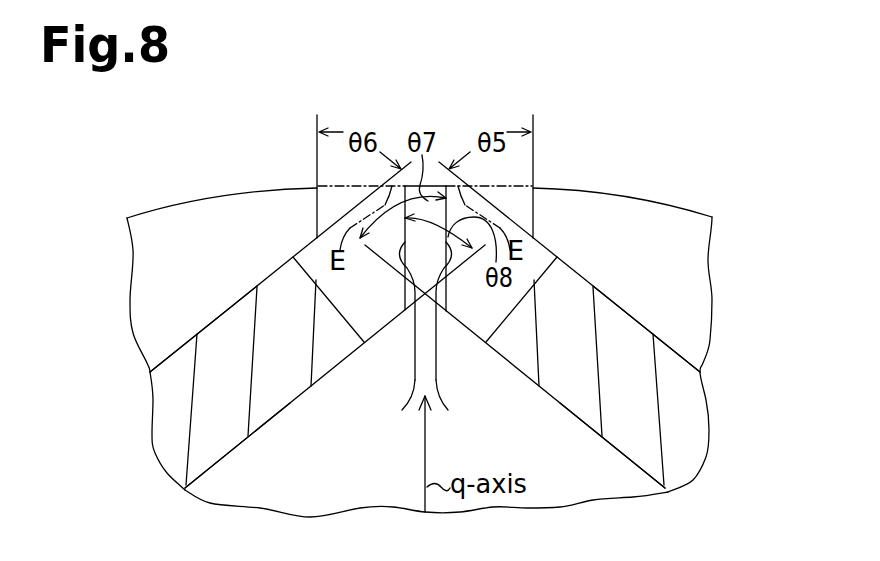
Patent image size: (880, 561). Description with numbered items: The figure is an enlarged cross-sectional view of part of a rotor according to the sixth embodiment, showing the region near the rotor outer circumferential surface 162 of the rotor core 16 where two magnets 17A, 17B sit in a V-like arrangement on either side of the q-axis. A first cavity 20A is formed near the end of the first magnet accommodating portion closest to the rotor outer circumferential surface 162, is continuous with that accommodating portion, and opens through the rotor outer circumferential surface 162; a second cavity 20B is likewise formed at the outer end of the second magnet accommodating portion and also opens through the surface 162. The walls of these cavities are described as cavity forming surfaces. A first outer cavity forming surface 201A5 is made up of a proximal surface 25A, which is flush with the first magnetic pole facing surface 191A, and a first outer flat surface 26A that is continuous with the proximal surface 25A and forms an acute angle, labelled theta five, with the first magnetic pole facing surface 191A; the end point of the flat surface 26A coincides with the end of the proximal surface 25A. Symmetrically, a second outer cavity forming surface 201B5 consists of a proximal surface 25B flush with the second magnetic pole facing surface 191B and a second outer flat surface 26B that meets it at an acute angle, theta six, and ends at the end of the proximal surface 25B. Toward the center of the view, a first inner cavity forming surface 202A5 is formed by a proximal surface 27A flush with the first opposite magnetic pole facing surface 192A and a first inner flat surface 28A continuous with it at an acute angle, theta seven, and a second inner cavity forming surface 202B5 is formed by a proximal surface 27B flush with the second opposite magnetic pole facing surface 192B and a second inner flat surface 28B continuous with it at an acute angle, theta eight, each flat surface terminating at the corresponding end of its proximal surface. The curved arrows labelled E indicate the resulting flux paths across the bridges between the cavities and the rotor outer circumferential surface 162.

The rotor core 16 is at (706, 233).
The rotor outer circumferential surface 162 is at (682, 207).
The first permanent magnet 17A is at (705, 421).
The second permanent magnet 17B is at (160, 421).
The first magnetic pole facing surface 191A is at (612, 300).
The second magnetic pole facing surface 191B is at (238, 300).
The first opposite magnetic pole facing surface 192A is at (631, 466).
The second opposite magnetic pole facing surface 192B is at (214, 466).
The first cavity 20A is at (499, 302).
The second cavity 20B is at (336, 284).
The proximal surface 25A is at (546, 262).
The proximal surface 25B is at (304, 262).
The first outer flat surface 26A is at (532, 200).
The second outer flat surface 26B is at (318, 200).
The proximal surface 27A is at (469, 336).
The proximal surface 27B is at (382, 336).
The first inner flat surface 28A is at (471, 409).
The second inner flat surface 28B is at (346, 381).
The first outer cavity forming surface 201A5 is at (596, 223).
The second outer cavity forming surface 201B5 is at (253, 224).
The first inner cavity forming surface 202A5 is at (514, 357).
The second inner cavity forming surface 202B5 is at (335, 357).